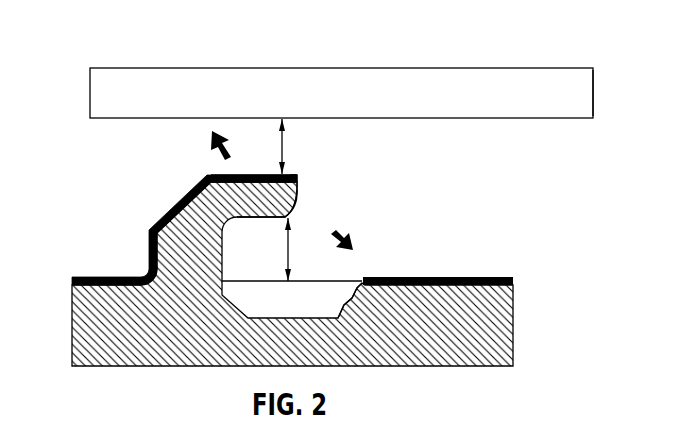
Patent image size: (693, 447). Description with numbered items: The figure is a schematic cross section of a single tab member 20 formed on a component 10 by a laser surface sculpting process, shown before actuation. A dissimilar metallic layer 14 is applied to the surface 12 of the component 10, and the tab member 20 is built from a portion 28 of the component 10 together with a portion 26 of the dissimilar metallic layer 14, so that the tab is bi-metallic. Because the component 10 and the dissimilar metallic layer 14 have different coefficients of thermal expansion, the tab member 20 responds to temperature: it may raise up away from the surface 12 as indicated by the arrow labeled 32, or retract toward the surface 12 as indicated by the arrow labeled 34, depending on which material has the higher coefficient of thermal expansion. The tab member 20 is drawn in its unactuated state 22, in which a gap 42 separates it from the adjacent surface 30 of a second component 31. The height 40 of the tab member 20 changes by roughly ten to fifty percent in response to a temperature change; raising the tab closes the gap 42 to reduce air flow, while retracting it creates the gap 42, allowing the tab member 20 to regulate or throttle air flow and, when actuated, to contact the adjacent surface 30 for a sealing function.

The component 10 is at (508, 326).
The surface 12 is at (354, 278).
The dissimilar metallic layer 14 is at (95, 277).
The tab member 20 is at (312, 173).
The unactuated state 22 is at (332, 161).
The portion of dissimilar metallic layer 26 is at (299, 176).
The portion of component 28 is at (293, 207).
The adjacent surface 30 is at (525, 119).
The second component 31 is at (604, 82).
The arrow indicating tab raising 32 is at (224, 157).
The arrow indicating tab retracting 34 is at (338, 230).
The height 40 is at (287, 249).
The gap 42 is at (282, 150).